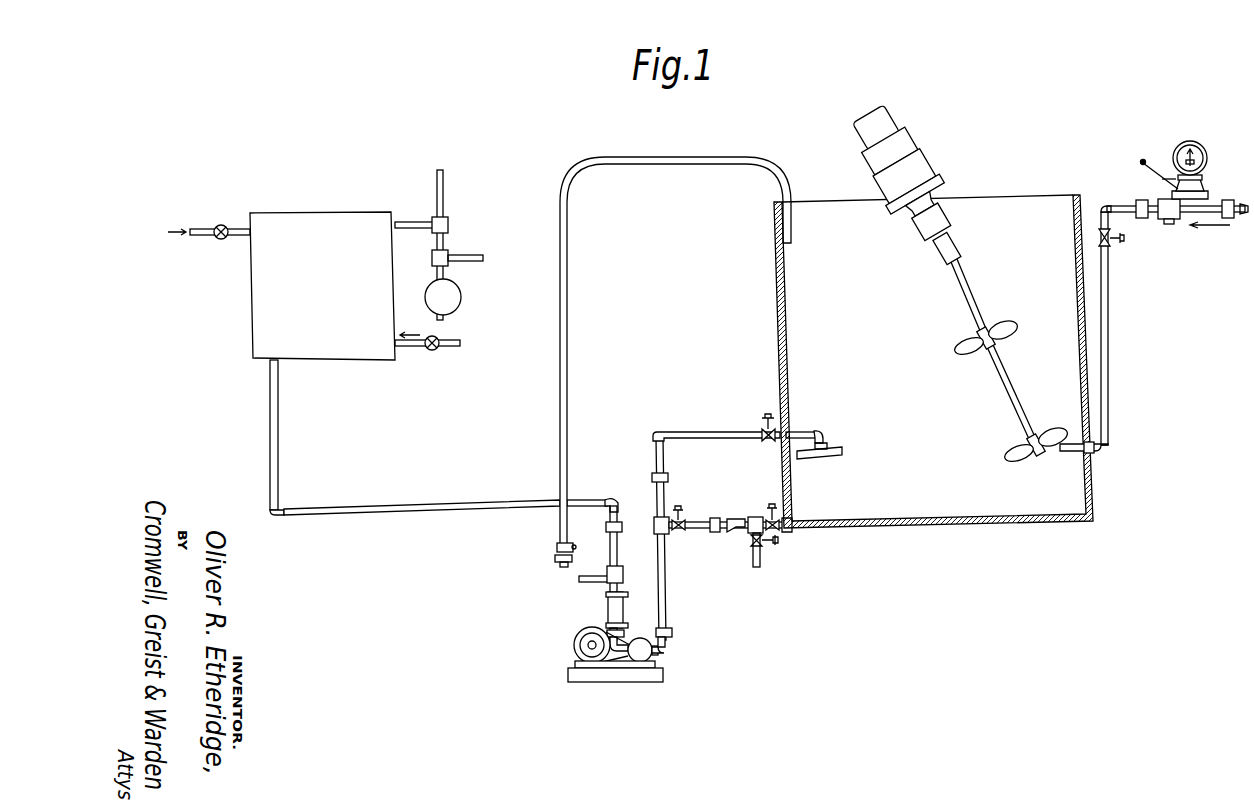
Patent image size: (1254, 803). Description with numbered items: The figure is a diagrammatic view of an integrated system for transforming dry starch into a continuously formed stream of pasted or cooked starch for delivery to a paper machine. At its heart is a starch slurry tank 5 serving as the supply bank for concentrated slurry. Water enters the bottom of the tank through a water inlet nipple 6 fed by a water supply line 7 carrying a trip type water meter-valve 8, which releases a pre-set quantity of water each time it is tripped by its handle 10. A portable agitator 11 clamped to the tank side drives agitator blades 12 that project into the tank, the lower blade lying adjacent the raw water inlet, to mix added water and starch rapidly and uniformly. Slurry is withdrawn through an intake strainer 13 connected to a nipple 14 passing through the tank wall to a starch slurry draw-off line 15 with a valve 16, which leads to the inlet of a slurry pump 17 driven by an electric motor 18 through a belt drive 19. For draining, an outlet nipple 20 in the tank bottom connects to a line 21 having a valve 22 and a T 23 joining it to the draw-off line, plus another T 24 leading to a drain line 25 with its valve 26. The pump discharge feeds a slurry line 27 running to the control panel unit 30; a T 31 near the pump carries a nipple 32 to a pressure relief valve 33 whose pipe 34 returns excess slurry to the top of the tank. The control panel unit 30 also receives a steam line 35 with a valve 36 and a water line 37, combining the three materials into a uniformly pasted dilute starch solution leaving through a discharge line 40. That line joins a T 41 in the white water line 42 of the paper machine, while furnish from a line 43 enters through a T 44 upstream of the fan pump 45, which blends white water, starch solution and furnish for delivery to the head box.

The starch slurry tank 5 is at (1018, 194).
The water inlet nipple 6 is at (1063, 453).
The water supply line 7 is at (1109, 356).
The water meter-valve 8 is at (1208, 187).
The handle 10 is at (1142, 158).
The portable agitator 11 is at (904, 140).
The agitator blades 12 is at (1004, 328).
The intake strainer 13 is at (840, 457).
The nipple 14 is at (806, 428).
The starch slurry draw-off line 15 is at (716, 432).
The valve 16 is at (765, 425).
The slurry pump 17 is at (641, 663).
The electric motor 18 is at (574, 648).
The belt drive 19 is at (616, 682).
The outlet nipple 20 is at (797, 523).
The line 21 is at (736, 520).
The valve 22 is at (773, 503).
The T 23 is at (654, 522).
The T 24 is at (755, 517).
The drain line 25 is at (760, 566).
The valve 26 is at (779, 543).
The slurry line 27 is at (278, 428).
The control panel unit 30 is at (328, 206).
The T 31 is at (622, 574).
The nipple 32 is at (591, 575).
The pressure relief valve 33 is at (558, 575).
The pipe 34 is at (753, 162).
The steam line 35 is at (406, 348).
The valve 36 is at (437, 351).
The water line 37 is at (194, 226).
The discharge line 40 is at (411, 222).
The T 41 is at (449, 222).
The white water line 42 is at (449, 242).
The line 43 is at (472, 262).
The T 44 is at (432, 258).
The fan pump 45 is at (462, 299).